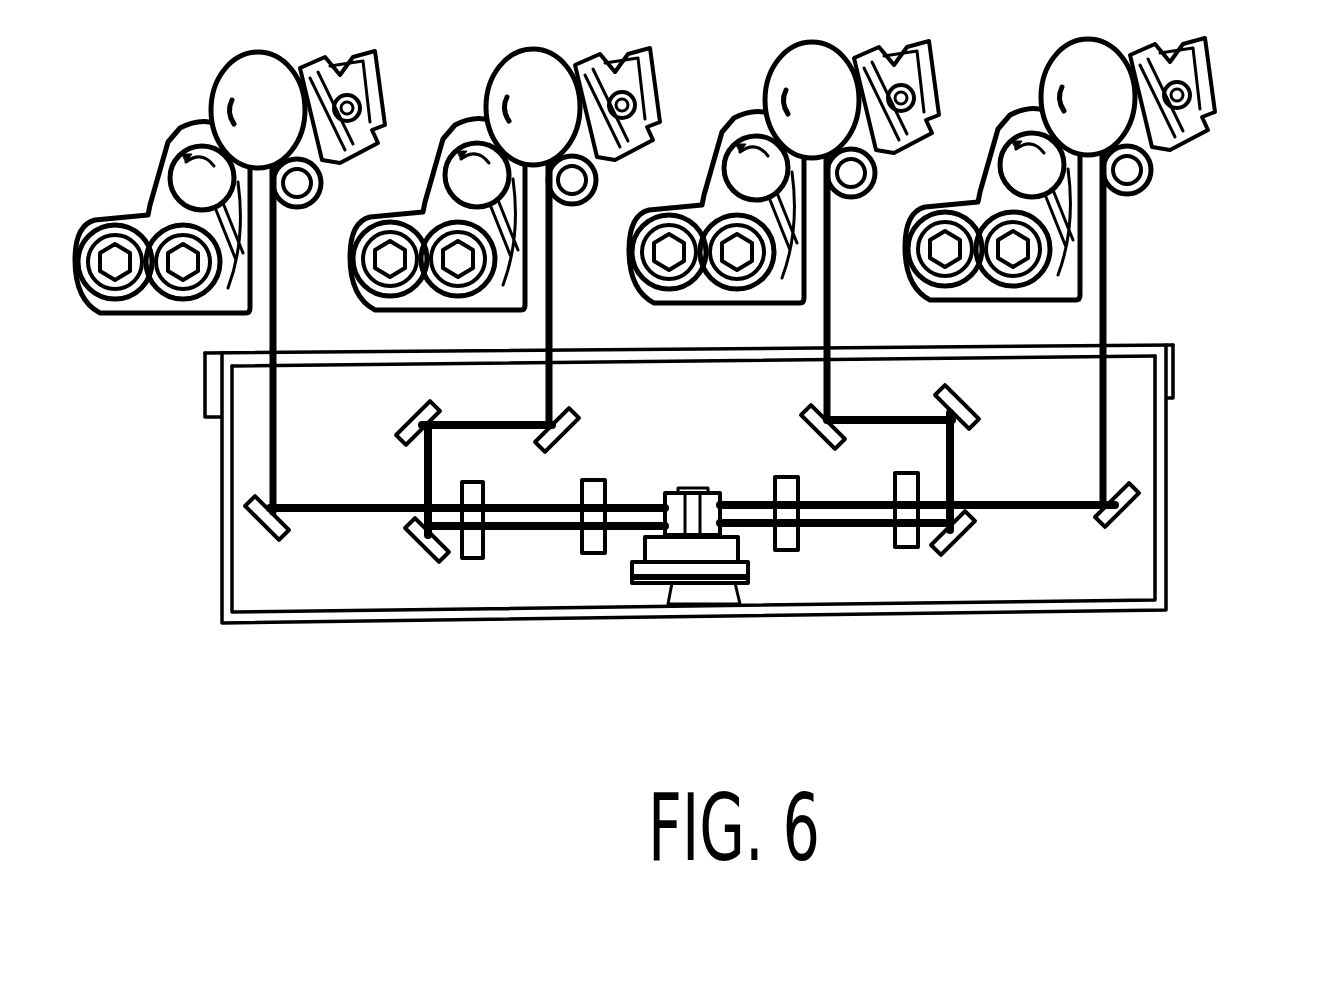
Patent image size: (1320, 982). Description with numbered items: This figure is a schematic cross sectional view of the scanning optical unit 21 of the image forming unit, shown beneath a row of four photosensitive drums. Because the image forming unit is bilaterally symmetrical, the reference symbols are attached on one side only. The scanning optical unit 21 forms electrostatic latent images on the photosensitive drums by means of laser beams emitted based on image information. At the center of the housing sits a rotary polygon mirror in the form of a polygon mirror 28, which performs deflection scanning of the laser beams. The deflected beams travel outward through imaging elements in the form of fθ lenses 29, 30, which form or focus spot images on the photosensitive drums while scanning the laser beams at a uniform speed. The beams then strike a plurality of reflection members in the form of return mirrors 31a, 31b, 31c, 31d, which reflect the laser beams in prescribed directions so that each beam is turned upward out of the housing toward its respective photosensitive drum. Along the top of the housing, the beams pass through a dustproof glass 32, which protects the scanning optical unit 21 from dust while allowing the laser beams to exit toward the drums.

The scanning optical unit 21 is at (1177, 460).
The polygon mirror 28 is at (742, 592).
The fθ lens 29 is at (787, 478).
The fθ lens 30 is at (907, 550).
The return mirror 31a is at (1130, 508).
The return mirror 31b is at (962, 548).
The return mirror 31c is at (977, 398).
The return mirror 31d is at (840, 412).
The dustproof glass 32 is at (1120, 340).